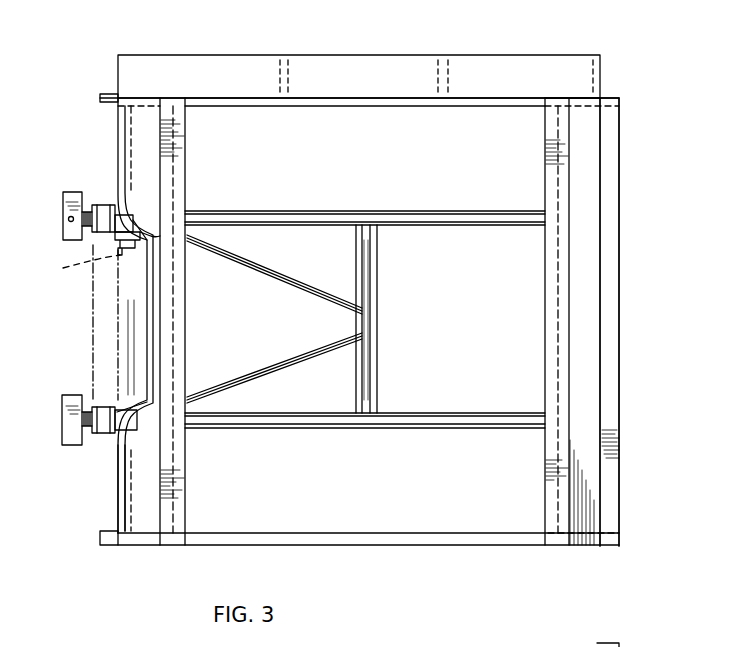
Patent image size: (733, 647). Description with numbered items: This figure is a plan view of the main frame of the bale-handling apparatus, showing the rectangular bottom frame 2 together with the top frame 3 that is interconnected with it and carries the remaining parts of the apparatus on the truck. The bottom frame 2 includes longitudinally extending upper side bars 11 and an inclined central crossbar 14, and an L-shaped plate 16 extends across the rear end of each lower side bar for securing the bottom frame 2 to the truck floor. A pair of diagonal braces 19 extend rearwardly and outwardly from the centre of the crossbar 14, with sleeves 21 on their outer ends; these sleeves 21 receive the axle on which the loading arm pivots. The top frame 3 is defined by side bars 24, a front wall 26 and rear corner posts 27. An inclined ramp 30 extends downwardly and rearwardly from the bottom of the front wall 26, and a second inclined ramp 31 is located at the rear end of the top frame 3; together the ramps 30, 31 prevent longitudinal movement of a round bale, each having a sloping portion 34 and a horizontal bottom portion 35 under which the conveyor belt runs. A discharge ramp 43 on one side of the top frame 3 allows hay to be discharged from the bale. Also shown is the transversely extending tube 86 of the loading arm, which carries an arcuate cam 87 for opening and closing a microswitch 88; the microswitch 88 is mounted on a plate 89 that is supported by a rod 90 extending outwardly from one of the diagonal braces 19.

The bottom frame 2 is at (365, 447).
The top frame 3 is at (420, 553).
The upper side bars 11 is at (422, 216).
The inclined central crossbar 14 is at (378, 325).
The L-shaped plate 16 is at (63, 212).
The diagonal braces 19 is at (305, 290).
The sleeves 21 is at (100, 205).
The side bars 24 is at (340, 100).
The front wall 26 is at (605, 346).
The rear corner posts 27 is at (108, 96).
The inclined ramp 30 is at (560, 540).
The inclined ramp 31 is at (135, 515).
The sloping portion 34 is at (140, 128).
The horizontal bottom portion 35 is at (185, 150).
The discharge ramp 43 is at (335, 72).
The tube 86 is at (102, 322).
The arcuate cam 87 is at (76, 268).
The microswitch 88 is at (125, 248).
The plate 89 is at (135, 222).
The rod 90 is at (140, 240).